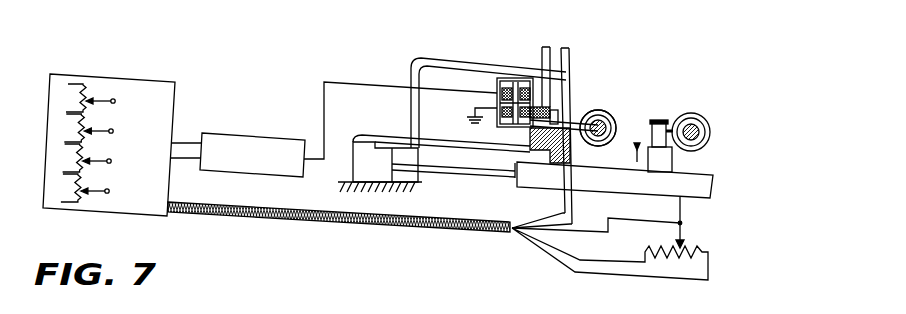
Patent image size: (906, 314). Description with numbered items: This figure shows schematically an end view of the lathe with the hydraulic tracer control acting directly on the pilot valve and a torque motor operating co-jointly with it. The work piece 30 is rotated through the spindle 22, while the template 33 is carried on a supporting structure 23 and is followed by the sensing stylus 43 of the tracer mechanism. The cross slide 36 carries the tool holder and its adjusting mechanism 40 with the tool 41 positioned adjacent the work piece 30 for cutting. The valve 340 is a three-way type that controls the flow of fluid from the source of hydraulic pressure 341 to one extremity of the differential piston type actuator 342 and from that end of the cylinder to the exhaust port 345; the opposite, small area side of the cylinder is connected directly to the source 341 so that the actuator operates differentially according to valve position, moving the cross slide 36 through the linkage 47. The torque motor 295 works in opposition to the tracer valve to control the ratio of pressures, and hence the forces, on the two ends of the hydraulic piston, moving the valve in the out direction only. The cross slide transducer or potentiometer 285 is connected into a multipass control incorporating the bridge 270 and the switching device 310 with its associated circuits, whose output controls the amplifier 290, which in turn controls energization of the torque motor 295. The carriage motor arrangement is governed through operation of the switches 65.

The bridge 270 is at (154, 61).
The switching device 310 is at (88, 143).
The amplifier 290 is at (281, 139).
The torque motor 295 is at (495, 127).
The exhaust port 345 is at (542, 55).
The source of hydraulic pressure 341 is at (570, 60).
The sensing stylus 43 is at (577, 118).
The valve 340 is at (595, 97).
The template 33 is at (600, 112).
The supporting structure 23 is at (606, 146).
The spindle 22 is at (701, 116).
The work piece 30 is at (710, 133).
The tool 41 is at (651, 126).
The tool holder and adjusting mechanism 40 is at (667, 158).
The switches 65 is at (577, 158).
The cross slide 36 is at (651, 191).
The linkage 47 is at (480, 173).
The differential piston type actuator 342 is at (418, 177).
The cross slide transducer or potentiometer 285 is at (702, 252).